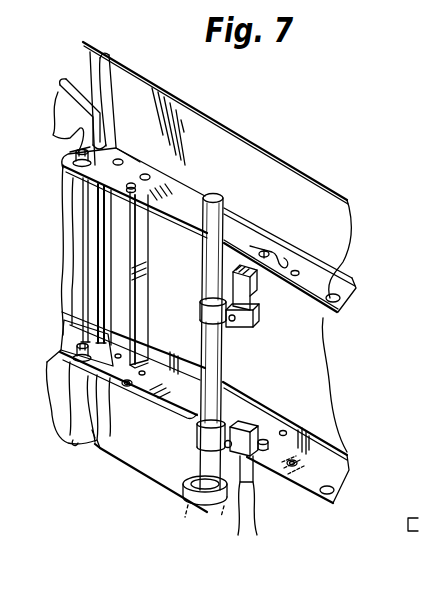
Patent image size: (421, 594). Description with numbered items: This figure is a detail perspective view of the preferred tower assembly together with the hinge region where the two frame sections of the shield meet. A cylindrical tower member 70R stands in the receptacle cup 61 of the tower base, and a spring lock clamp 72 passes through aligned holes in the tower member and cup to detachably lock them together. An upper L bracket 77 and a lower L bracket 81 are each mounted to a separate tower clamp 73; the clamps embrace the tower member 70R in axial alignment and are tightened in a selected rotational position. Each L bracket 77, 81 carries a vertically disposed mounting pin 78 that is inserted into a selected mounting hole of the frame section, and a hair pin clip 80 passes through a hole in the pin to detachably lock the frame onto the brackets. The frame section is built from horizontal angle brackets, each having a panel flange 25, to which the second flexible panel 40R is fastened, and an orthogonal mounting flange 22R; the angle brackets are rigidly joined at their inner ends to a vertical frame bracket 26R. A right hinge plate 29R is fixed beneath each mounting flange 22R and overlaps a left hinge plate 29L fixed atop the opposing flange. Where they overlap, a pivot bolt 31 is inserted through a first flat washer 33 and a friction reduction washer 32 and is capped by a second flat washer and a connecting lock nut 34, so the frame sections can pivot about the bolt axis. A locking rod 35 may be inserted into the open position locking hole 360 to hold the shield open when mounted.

The mounting flange 22R is at (342, 318).
The panel flange 25 is at (322, 455).
The vertical frame bracket 26R is at (143, 298).
The left hinge plate 29L is at (72, 145).
The right hinge plate 29R is at (152, 153).
The pivot bolt 31 is at (108, 56).
The friction reduction washer 32 is at (80, 163).
The first flat washer 33 is at (60, 162).
The connecting lock nut 34 is at (53, 417).
The locking rod 35 is at (62, 78).
The open position locking hole 360 is at (120, 100).
The second flexible panel 40R is at (148, 462).
The receptacle cup 61 is at (208, 514).
The tower member 70R is at (230, 210).
The spring lock clamp 72 is at (190, 495).
The tower clamp 73 is at (262, 320).
The upper L bracket 77 is at (240, 287).
The mounting pin 78 is at (272, 232).
The hair pin clip 80 is at (284, 263).
The lower L bracket 81 is at (255, 468).